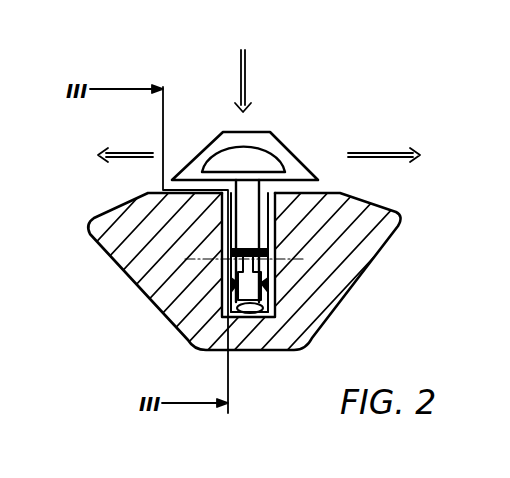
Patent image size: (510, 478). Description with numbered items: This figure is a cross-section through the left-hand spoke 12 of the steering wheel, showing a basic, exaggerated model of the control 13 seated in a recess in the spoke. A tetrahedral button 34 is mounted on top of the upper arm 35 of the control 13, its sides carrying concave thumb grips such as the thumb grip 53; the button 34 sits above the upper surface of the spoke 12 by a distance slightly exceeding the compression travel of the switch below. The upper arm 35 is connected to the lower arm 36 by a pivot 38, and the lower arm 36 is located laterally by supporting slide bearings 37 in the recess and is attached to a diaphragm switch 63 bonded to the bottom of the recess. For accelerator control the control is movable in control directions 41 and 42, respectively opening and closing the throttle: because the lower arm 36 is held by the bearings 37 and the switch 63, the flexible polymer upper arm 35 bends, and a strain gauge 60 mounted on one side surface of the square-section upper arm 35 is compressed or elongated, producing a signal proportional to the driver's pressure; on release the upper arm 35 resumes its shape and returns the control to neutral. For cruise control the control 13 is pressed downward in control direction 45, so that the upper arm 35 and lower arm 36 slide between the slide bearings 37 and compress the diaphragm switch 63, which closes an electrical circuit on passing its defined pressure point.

The left-hand spoke of the steering wheel 12 is at (140, 227).
The control 13 is at (270, 180).
The tetrahedral button 34 is at (210, 157).
The upper arm 35 is at (275, 222).
The lower arm 36 is at (290, 307).
The supporting slide bearings 37 is at (224, 283).
The pivot 38 is at (222, 282).
The control direction 41 is at (115, 158).
The control direction 42 is at (399, 158).
The control direction 45 is at (244, 68).
The thumb grip 53 is at (250, 146).
The strain gauge 60 is at (222, 234).
The diaphragm switch 63 is at (250, 313).